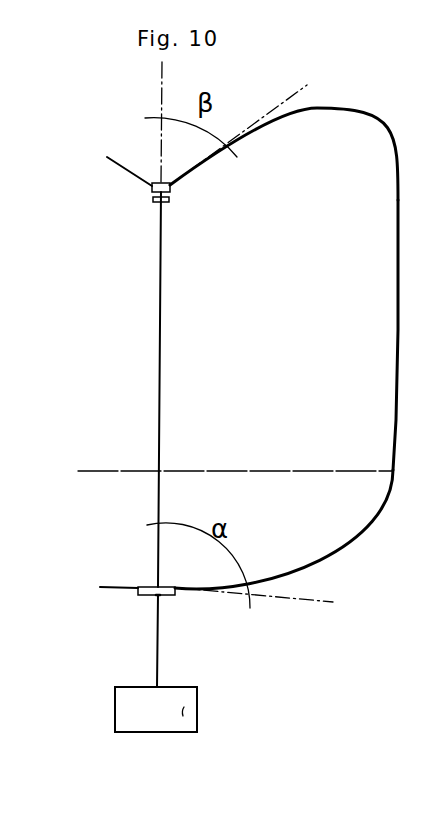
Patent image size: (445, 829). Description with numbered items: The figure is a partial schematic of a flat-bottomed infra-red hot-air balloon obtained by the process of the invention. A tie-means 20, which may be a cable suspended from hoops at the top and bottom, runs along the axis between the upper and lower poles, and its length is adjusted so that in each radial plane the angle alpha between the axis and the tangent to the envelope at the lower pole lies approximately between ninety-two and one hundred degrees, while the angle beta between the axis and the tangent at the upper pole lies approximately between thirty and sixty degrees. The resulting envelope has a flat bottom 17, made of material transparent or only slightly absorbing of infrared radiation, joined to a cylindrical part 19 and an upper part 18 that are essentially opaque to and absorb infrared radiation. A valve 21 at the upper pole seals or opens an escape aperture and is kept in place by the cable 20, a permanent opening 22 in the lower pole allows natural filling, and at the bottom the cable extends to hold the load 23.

The flat bottom 17 is at (308, 552).
The upper part 18 is at (270, 123).
The cylindrical part 19 is at (398, 332).
The tie-means 20 is at (160, 375).
The valve 21 is at (165, 195).
The permanent opening 22 is at (153, 592).
The load 23 is at (198, 698).